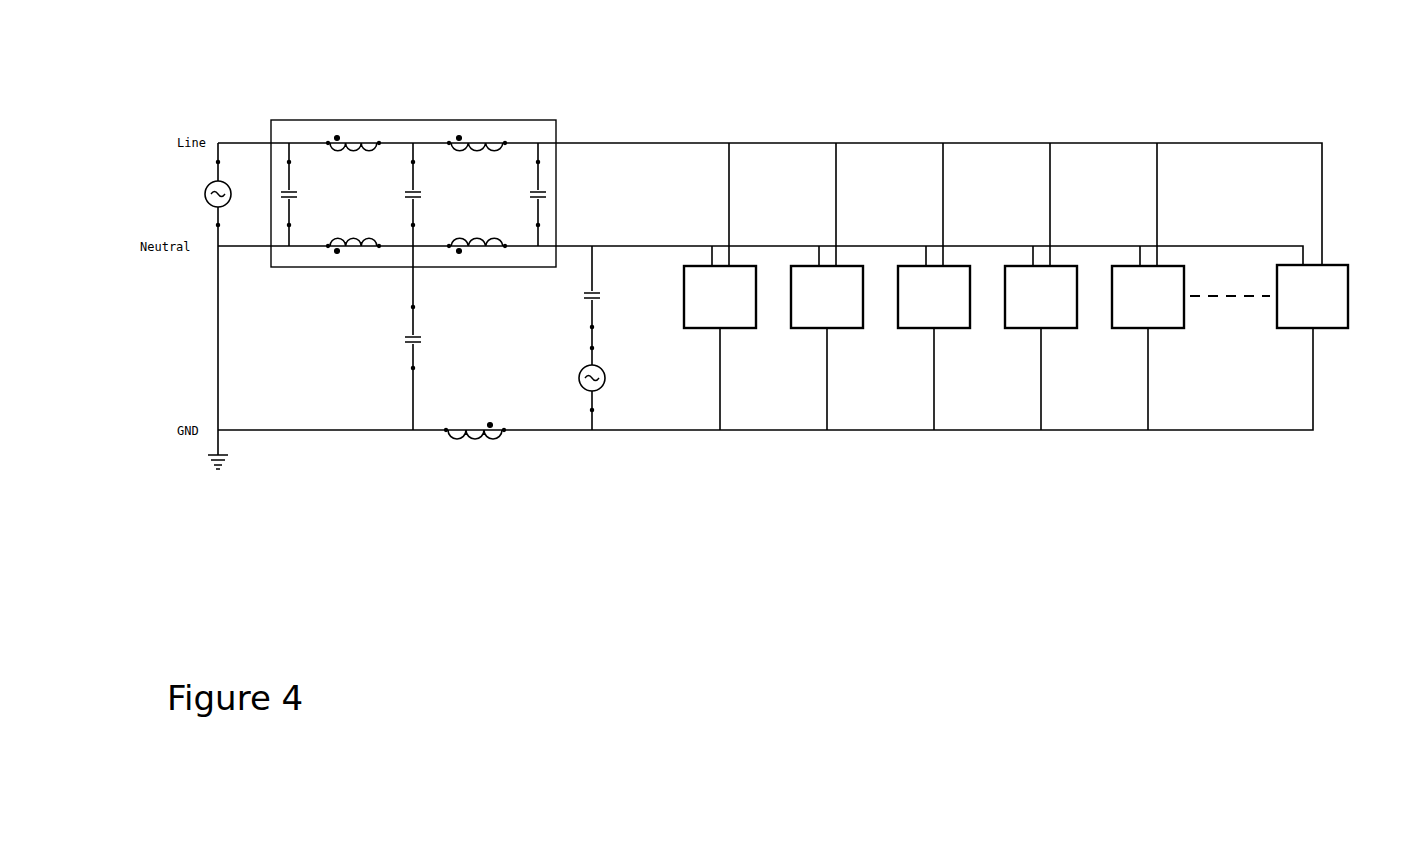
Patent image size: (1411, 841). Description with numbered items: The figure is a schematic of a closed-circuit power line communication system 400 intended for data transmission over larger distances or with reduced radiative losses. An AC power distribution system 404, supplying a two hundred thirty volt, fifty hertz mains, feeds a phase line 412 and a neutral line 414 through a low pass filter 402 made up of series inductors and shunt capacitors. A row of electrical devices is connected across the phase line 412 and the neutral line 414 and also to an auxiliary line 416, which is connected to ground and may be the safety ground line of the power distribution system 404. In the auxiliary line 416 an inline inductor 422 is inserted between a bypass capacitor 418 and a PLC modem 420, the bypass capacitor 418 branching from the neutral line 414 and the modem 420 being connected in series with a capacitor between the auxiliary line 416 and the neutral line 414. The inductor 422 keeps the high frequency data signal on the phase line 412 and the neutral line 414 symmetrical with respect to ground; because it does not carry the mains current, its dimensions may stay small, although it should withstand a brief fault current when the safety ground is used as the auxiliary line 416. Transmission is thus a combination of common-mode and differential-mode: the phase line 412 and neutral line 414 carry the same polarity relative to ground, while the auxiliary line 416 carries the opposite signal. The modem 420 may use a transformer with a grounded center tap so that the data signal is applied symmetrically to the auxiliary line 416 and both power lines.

The power line communication system 400 is at (769, 644).
The low pass filter 402 is at (550, 120).
The power distribution system 404 is at (205, 178).
The phase line 412 is at (1198, 143).
The neutral line 414 is at (1198, 246).
The auxiliary line 416 is at (1195, 430).
The bypass capacitor 418 is at (387, 338).
The PLC modem 420 is at (565, 338).
The inductor 422 is at (475, 450).